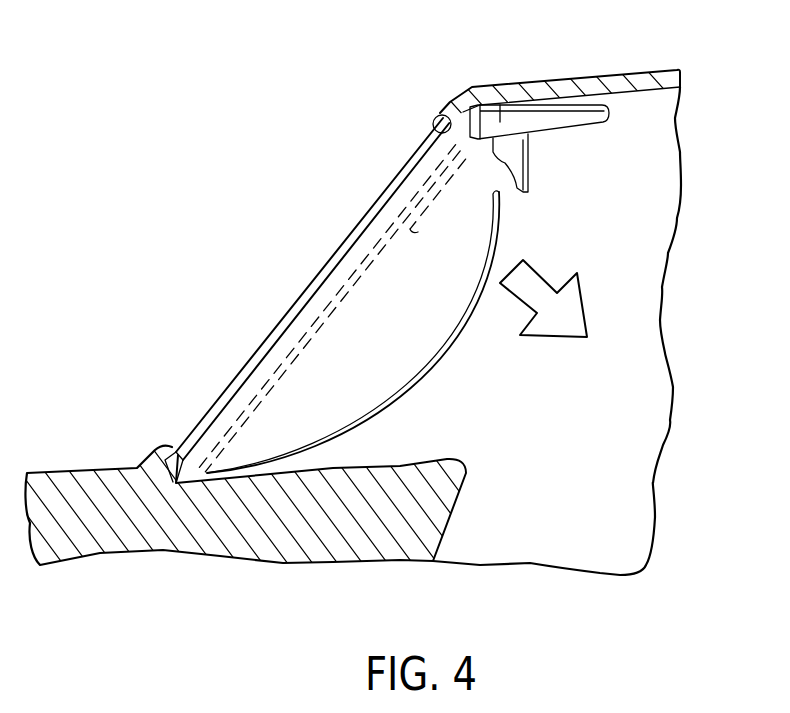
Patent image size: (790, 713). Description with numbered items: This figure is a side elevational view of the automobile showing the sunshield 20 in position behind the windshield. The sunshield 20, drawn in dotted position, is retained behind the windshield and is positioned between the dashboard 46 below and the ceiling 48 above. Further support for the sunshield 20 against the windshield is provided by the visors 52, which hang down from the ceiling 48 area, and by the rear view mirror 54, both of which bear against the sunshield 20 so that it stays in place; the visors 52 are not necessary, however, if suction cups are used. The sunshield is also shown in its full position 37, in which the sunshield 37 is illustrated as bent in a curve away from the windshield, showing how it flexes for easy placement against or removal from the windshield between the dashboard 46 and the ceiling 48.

The sunshield 20 is at (372, 257).
The sunshield in full position 37 is at (263, 453).
The dashboard 46 is at (363, 462).
The ceiling 48 is at (640, 70).
The visors 52 is at (553, 118).
The rear view mirror 54 is at (530, 163).